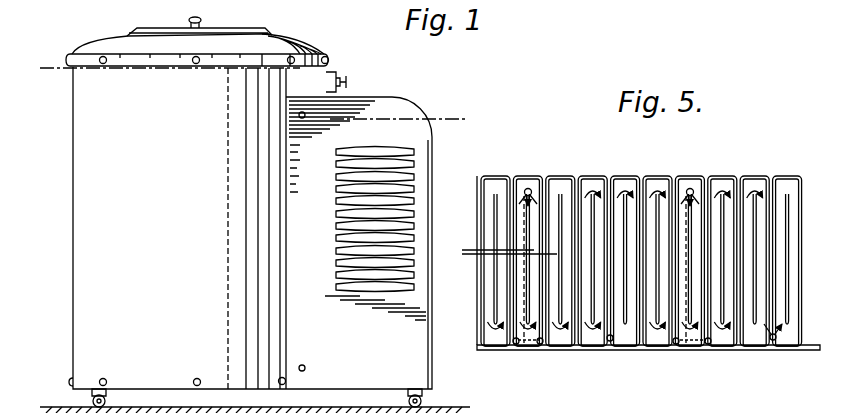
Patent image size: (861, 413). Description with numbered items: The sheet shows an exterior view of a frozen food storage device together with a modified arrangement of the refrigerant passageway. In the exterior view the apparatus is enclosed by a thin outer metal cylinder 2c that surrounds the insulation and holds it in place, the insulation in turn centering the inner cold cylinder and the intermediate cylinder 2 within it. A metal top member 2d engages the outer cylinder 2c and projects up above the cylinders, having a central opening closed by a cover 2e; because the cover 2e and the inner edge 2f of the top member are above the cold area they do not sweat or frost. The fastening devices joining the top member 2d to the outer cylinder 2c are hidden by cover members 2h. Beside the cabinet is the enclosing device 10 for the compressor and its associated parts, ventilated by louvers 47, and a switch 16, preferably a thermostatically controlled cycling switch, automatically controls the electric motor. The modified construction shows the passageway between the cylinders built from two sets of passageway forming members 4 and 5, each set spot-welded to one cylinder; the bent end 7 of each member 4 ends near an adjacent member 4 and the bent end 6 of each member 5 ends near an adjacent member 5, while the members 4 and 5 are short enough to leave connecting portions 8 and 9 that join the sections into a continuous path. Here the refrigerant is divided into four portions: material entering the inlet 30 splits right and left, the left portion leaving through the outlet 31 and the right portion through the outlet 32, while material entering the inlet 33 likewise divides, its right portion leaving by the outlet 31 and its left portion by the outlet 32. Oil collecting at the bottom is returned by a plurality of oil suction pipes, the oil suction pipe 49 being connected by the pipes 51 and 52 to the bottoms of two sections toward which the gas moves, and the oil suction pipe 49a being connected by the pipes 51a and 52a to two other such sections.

In FIG. 1, the intermediate cylinder 2 is at (47, 66).
In FIG. 5, the intermediate cylinder 2 is at (478, 292).
In FIG. 1, the outer metal cylinder 2c is at (73, 158).
In FIG. 1, the top member 2d is at (300, 44).
In FIG. 1, the cover 2e is at (147, 28).
In FIG. 1, the inner edge 2f is at (272, 34).
In FIG. 1, the cover member 2h is at (106, 63).
In FIG. 1, the switch 16 is at (338, 100).
In FIG. 1, the louvers 47 is at (340, 252).
In FIG. 1, the enclosing device 10 is at (420, 352).
In FIG. 5, the passageway forming members 4 is at (546, 223).
In FIG. 5, the passageway forming members 5 is at (476, 250).
In FIG. 5, the bent end 7 is at (594, 186).
In FIG. 5, the connecting portions 9 is at (646, 182).
In FIG. 5, the connecting portions 8 is at (643, 350).
In FIG. 5, the bent end 6 is at (606, 350).
In FIG. 5, the oil suction pipe 49a is at (520, 212).
In FIG. 5, the oil suction pipe 49 is at (700, 214).
In FIG. 5, the outlet 32 is at (529, 188).
In FIG. 5, the outlet 31 is at (690, 188).
In FIG. 5, the pipe 52a is at (514, 346).
In FIG. 5, the pipe 51a is at (540, 346).
In FIG. 5, the inlet 33 is at (611, 343).
In FIG. 5, the pipe 52 is at (678, 346).
In FIG. 5, the pipe 51 is at (707, 346).
In FIG. 5, the inlet 30 is at (773, 342).